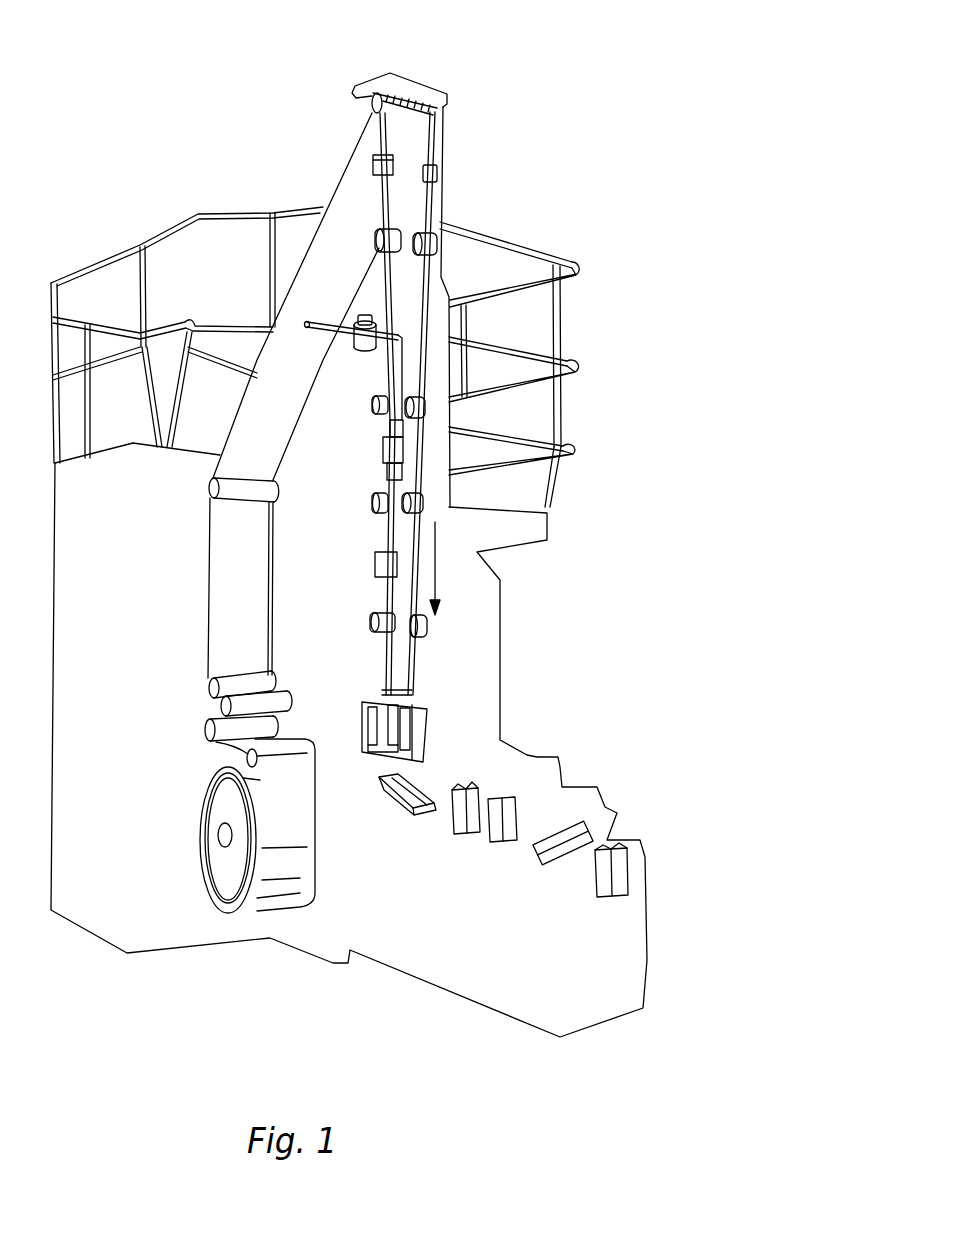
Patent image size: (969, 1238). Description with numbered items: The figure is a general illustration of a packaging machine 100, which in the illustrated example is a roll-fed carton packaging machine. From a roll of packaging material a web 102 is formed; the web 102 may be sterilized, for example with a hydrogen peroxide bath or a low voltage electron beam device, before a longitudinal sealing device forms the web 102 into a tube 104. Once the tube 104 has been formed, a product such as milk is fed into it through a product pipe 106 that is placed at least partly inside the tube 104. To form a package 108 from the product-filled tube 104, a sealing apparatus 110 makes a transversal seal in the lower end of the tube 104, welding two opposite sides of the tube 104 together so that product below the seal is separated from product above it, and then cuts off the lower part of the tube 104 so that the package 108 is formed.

The packaging machine 100 is at (553, 137).
The web 102 is at (225, 605).
The tube 104 is at (402, 667).
The product pipe 106 is at (383, 380).
The package 108 is at (393, 792).
The sealing apparatus 110 is at (412, 737).